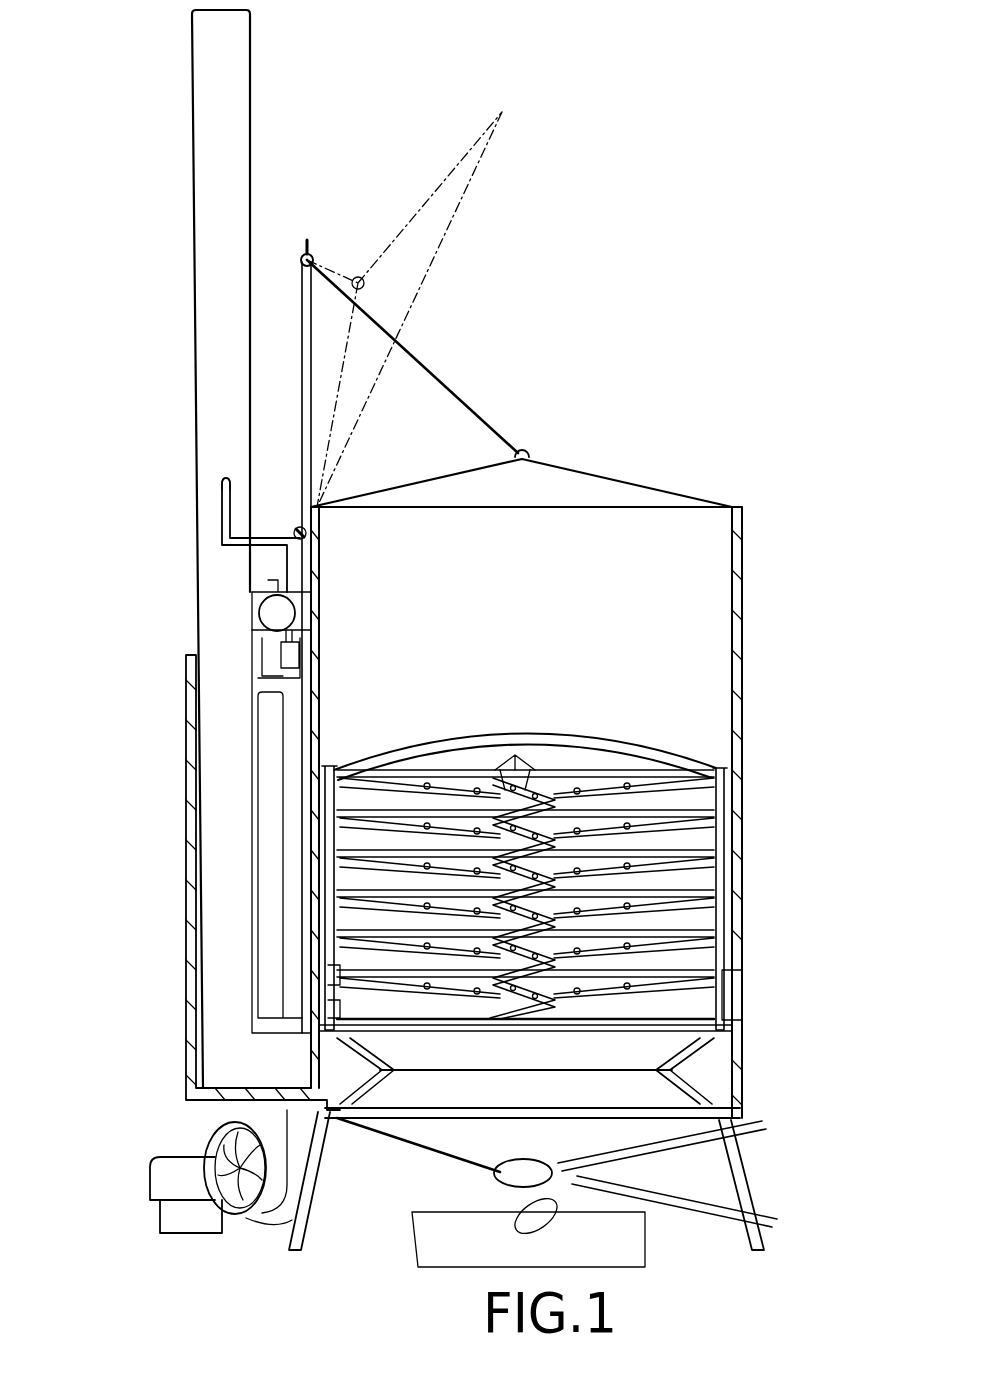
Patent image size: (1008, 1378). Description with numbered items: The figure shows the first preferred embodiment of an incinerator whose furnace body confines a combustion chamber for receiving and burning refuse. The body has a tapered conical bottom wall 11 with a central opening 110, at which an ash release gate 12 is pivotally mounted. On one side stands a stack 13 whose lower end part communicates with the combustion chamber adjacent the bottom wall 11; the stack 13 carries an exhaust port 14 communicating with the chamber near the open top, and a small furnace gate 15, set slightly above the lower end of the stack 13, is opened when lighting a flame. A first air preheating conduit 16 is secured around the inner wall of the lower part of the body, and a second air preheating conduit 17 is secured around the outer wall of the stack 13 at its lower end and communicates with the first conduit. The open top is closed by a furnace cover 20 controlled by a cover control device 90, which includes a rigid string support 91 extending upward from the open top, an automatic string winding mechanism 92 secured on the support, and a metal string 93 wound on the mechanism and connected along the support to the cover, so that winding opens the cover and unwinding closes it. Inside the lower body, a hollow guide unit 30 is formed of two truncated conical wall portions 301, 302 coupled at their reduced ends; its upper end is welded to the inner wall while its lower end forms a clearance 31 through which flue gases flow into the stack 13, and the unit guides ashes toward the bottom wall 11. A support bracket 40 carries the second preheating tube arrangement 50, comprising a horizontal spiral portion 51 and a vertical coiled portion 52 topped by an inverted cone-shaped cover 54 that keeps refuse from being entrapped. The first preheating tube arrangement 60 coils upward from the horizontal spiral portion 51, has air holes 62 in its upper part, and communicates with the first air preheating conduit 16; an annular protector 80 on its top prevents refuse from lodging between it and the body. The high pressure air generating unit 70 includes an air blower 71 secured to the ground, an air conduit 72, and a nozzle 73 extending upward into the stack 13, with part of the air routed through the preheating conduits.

The bottom wall 11 is at (397, 1140).
The ash release gate 12 is at (500, 1166).
The stack 13 is at (207, 268).
The exhaust port 14 is at (268, 618).
The small furnace gate 15 is at (742, 996).
The first air preheating conduit 16 is at (742, 852).
The second air preheating conduit 17 is at (188, 862).
The furnace cover 20 is at (598, 470).
The hollow guide unit 30 is at (714, 1046).
The clearance 31 is at (338, 1118).
The support bracket 40 is at (344, 750).
The second preheating tube arrangement 50 is at (500, 768).
The horizontal spiral portion 51 is at (692, 1028).
The vertical coiled portion 52 is at (557, 1000).
The inverted cone-shaped cover 54 is at (530, 768).
The first preheating tube arrangement 60 is at (725, 782).
The air holes 62 is at (625, 792).
The high pressure air generating unit 70 is at (234, 1222).
The air blower 71 is at (186, 1214).
The air conduit 72 is at (222, 515).
The nozzle 73 is at (222, 482).
The annular protector 80 is at (663, 740).
The cover control device 90 is at (308, 244).
The rigid string support 91 is at (308, 297).
The automatic string winding mechanism 92 is at (298, 528).
The metal string 93 is at (447, 380).
The central opening 110 is at (563, 1168).
The truncated conical wall portion 301 is at (683, 1042).
The truncated conical wall portion 302 is at (708, 1042).